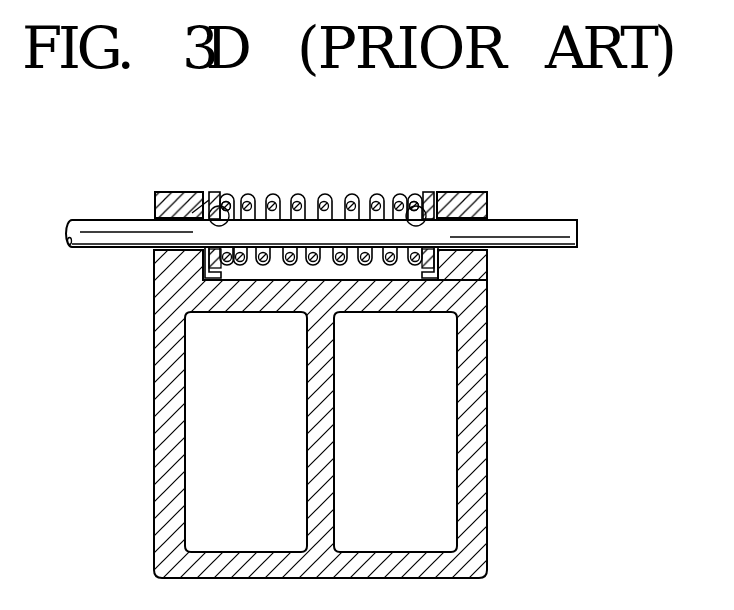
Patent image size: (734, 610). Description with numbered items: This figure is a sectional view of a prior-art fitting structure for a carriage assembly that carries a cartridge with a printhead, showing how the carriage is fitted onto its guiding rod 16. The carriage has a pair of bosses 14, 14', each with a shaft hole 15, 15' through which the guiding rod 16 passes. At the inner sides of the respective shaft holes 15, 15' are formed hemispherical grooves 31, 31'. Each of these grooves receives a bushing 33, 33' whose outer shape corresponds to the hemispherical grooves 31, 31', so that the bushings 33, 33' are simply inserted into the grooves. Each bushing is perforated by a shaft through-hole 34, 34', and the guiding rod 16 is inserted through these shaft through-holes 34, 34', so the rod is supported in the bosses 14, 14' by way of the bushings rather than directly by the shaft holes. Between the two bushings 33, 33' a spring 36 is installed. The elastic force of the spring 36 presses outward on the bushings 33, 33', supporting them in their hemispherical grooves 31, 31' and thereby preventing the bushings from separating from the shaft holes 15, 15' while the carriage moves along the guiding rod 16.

The boss 14 is at (177, 172).
The boss 14' is at (475, 167).
The shaft hole 15 is at (151, 192).
The shaft hole 15' is at (500, 190).
The guiding rod 16 is at (74, 219).
The hemispherical groove 31 is at (212, 202).
The hemispherical groove 31' is at (429, 197).
The bushing 33 is at (291, 414).
The bushing 33' is at (494, 282).
The shaft through-hole 34 is at (251, 167).
The shaft through-hole 34' is at (392, 174).
The spring 36 is at (328, 200).